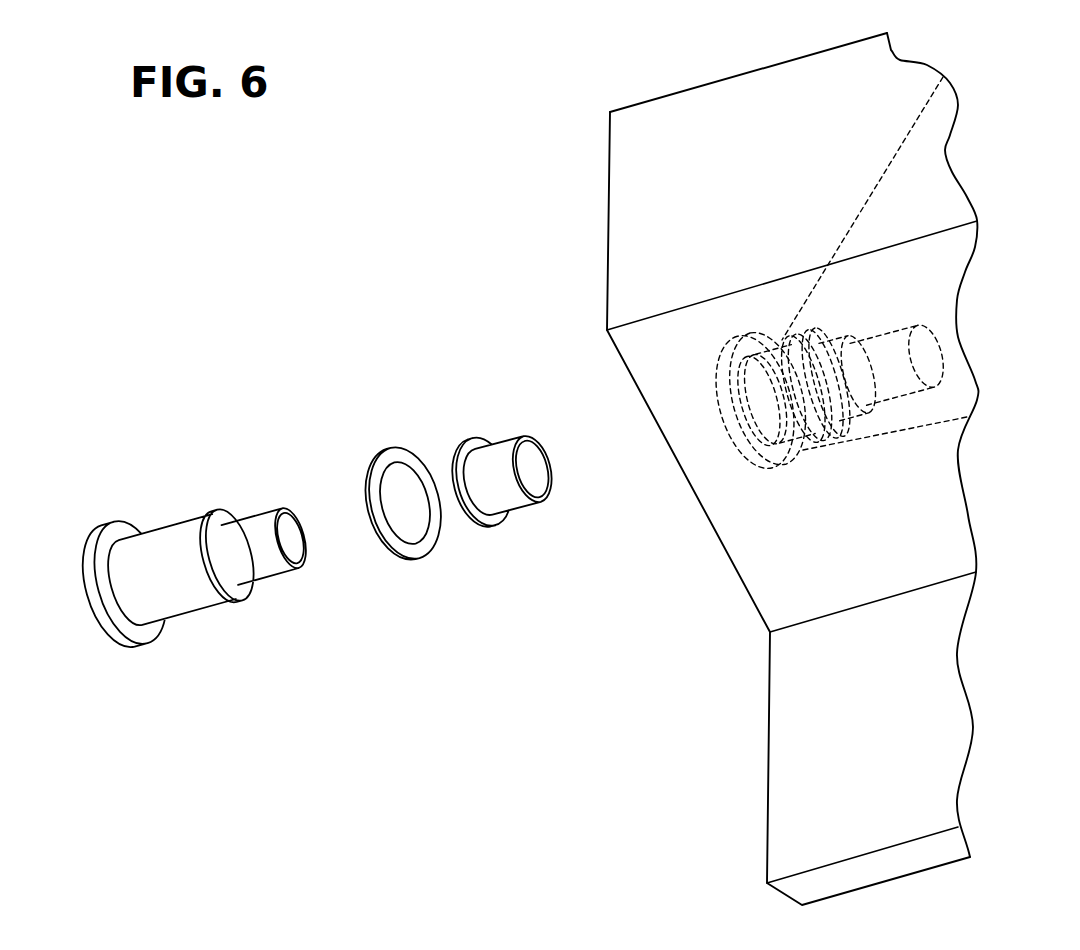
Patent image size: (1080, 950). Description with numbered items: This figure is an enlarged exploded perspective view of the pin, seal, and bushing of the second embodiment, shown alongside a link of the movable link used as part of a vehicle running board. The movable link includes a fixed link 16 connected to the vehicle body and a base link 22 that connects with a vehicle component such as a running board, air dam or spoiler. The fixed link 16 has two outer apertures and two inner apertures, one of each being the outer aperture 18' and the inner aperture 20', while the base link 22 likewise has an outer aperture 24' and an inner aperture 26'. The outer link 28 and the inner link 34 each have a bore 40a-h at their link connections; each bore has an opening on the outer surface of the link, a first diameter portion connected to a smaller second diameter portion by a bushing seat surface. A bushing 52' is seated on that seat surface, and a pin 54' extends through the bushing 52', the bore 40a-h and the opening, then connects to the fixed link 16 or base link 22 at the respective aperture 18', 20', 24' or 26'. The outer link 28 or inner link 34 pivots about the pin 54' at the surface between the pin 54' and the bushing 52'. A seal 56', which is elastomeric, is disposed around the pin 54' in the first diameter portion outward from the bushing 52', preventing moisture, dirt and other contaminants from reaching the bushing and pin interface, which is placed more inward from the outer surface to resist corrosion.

The fixed link 16 is at (712, 100).
The base link 22 is at (792, 552).
The outer link 28 is at (870, 177).
The inner link 34 is at (885, 433).
The outer aperture 18' is at (608, 357).
The inner aperture 20' is at (776, 395).
The outer aperture 24' is at (807, 388).
The inner aperture 26' is at (838, 383).
The bore 40a-h is at (933, 345).
The pin 54' is at (194, 594).
The seal 56' is at (407, 544).
The bushing 52' is at (502, 519).